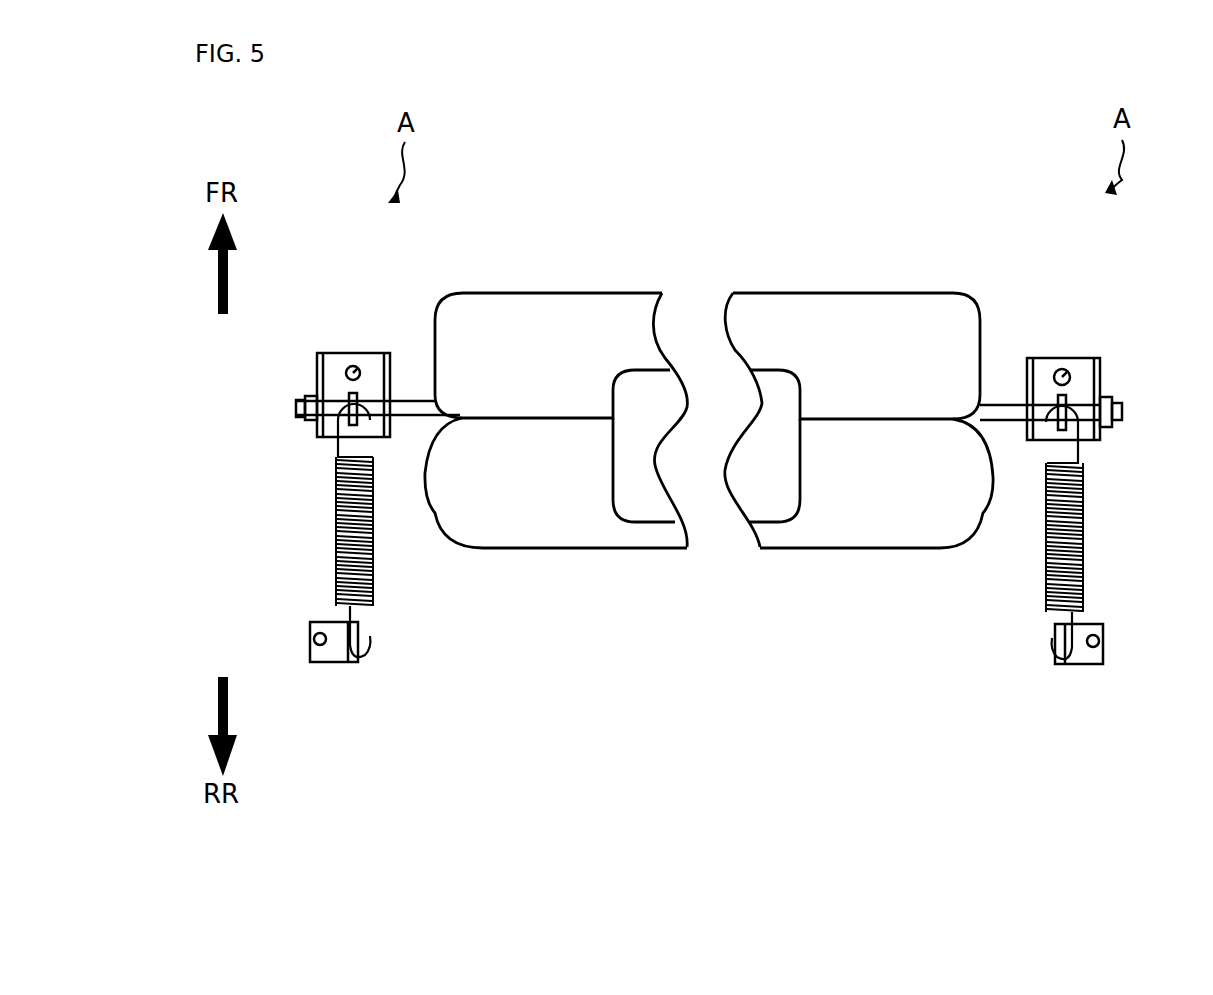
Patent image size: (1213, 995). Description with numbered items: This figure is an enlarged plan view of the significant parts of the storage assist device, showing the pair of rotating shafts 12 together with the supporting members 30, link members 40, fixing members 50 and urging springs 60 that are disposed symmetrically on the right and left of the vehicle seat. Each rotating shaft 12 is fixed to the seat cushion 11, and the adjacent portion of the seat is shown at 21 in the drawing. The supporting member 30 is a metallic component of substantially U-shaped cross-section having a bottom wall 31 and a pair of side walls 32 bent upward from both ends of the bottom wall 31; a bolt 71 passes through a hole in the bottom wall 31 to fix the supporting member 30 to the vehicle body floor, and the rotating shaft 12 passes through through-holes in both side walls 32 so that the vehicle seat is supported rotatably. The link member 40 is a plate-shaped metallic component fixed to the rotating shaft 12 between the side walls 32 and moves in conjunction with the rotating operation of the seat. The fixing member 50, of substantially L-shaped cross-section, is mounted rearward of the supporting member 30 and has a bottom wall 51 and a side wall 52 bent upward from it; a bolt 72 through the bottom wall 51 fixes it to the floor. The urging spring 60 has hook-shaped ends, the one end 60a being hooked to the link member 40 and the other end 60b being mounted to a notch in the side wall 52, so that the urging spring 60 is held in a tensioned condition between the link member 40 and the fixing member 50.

The seat cushion 11 is at (537, 318).
The rotating shaft 12 is at (405, 418).
The lower frame member 21 is at (560, 530).
The supporting member 30 is at (707, 325).
The bottom wall 31 is at (418, 270).
The side walls 32 is at (318, 356).
The link member 40 is at (318, 395).
The fixing member 50 is at (712, 705).
The bottom wall 51 is at (322, 655).
The side wall 52 is at (350, 660).
The urging spring 60 is at (711, 531).
The one end of the urging spring 60a is at (335, 440).
The other end of the urging spring 60b is at (340, 612).
The bolt 71 is at (347, 373).
The bolt 72 is at (310, 632).